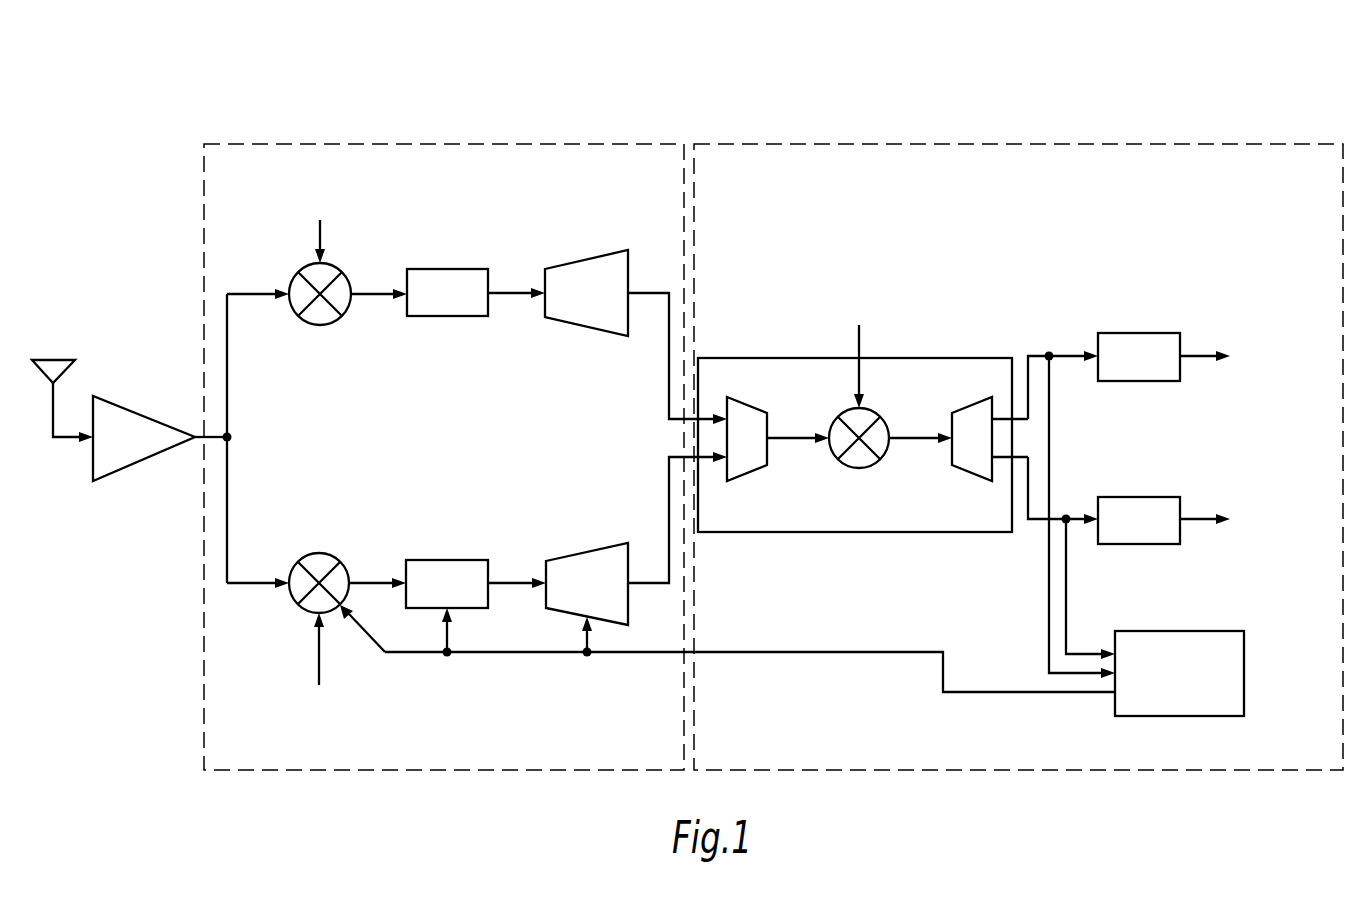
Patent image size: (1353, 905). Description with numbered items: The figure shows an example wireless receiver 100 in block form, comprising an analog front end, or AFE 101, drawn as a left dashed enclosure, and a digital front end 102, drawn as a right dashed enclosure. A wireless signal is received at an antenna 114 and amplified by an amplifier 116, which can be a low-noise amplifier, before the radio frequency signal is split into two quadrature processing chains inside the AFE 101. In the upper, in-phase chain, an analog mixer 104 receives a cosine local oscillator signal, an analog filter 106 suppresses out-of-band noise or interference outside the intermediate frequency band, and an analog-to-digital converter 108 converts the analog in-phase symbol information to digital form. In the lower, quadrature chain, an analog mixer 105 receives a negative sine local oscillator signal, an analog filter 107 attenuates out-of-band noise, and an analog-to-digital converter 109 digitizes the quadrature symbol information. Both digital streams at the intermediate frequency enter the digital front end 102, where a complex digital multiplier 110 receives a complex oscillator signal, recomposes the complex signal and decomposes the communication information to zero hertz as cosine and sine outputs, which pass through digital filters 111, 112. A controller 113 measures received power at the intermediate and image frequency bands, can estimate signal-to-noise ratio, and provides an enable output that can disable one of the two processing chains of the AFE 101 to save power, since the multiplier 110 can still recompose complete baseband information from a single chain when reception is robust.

The receiver 100 is at (128, 84).
The AFE 101 is at (445, 143).
The digital front end 102 is at (1018, 143).
The analog mixer 104 is at (335, 263).
The analog mixer 105 is at (335, 555).
The analog filter 106 is at (447, 267).
The analog filter 107 is at (447, 556).
The analog-to-digital converter 108 is at (585, 257).
The analog-to-digital converter 109 is at (585, 549).
The complex digital multiplier 110 is at (855, 533).
The digital filter 111 is at (1140, 331).
The digital filter 112 is at (1140, 496).
The controller 113 is at (1180, 717).
The antenna 114 is at (53, 361).
The amplifier 116 is at (145, 414).